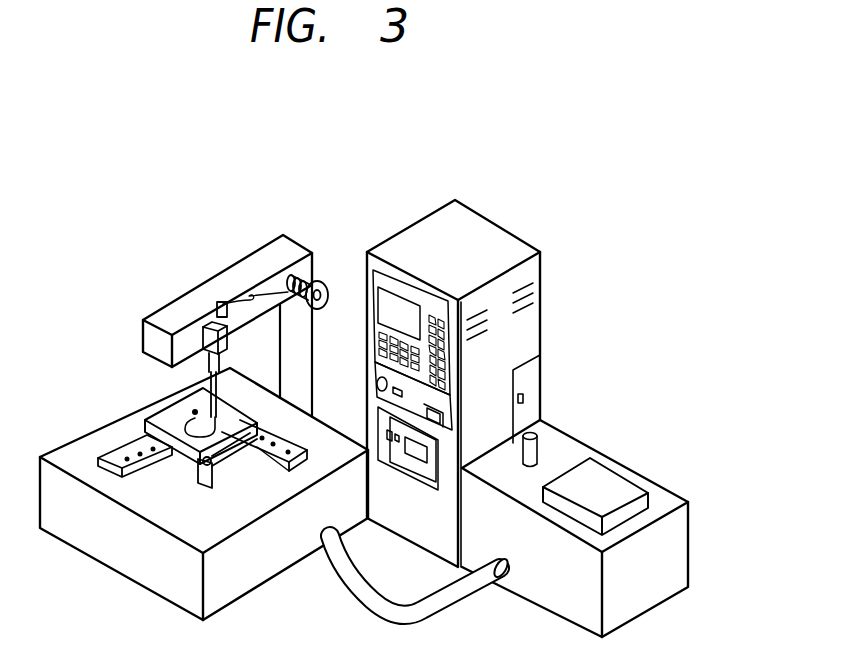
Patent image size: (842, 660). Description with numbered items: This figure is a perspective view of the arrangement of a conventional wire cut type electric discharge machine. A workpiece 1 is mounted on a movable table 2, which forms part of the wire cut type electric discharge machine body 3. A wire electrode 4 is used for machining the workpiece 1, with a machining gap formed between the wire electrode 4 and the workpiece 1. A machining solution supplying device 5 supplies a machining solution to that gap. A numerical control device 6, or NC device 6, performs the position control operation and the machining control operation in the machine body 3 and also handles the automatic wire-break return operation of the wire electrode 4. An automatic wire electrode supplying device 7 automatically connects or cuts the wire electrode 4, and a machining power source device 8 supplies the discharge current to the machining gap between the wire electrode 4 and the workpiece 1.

The workpiece 1 is at (163, 408).
The movable table 2 is at (117, 448).
The wire cut type electric discharge machine body 3 is at (262, 249).
The wire electrode 4 is at (317, 282).
The machining solution supplying device 5 is at (600, 442).
The numerical control device 6 is at (543, 272).
The automatic wire electrode supplying device 7 is at (206, 322).
The machining power source device 8 is at (543, 385).